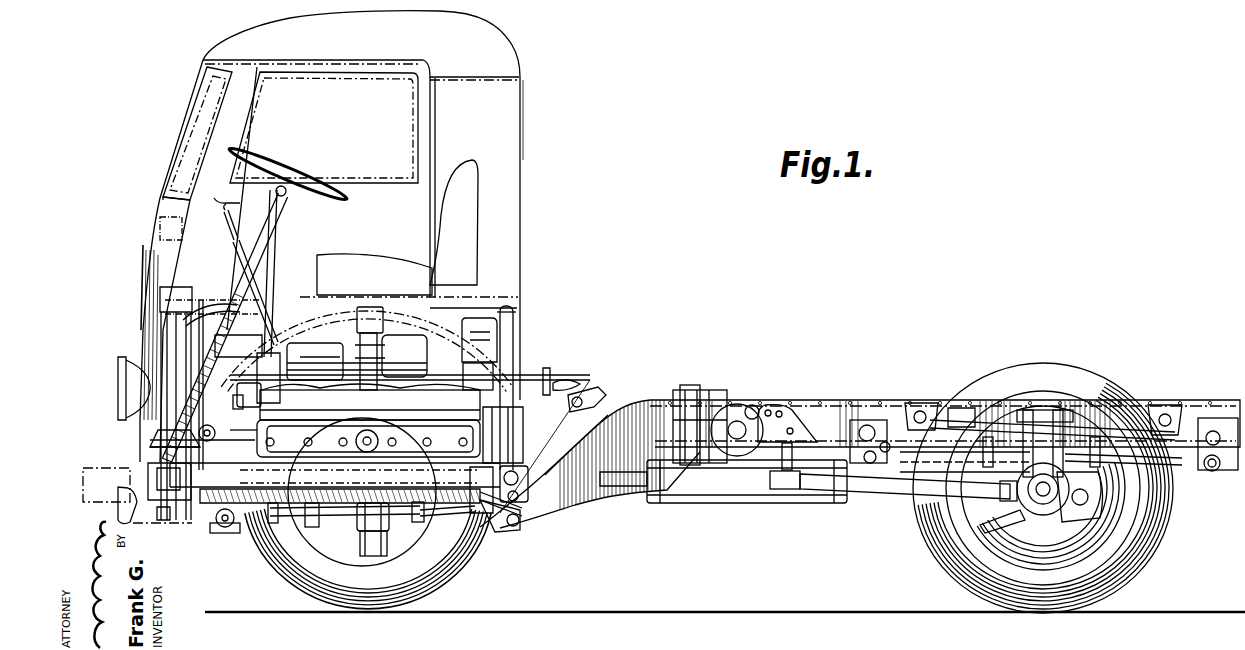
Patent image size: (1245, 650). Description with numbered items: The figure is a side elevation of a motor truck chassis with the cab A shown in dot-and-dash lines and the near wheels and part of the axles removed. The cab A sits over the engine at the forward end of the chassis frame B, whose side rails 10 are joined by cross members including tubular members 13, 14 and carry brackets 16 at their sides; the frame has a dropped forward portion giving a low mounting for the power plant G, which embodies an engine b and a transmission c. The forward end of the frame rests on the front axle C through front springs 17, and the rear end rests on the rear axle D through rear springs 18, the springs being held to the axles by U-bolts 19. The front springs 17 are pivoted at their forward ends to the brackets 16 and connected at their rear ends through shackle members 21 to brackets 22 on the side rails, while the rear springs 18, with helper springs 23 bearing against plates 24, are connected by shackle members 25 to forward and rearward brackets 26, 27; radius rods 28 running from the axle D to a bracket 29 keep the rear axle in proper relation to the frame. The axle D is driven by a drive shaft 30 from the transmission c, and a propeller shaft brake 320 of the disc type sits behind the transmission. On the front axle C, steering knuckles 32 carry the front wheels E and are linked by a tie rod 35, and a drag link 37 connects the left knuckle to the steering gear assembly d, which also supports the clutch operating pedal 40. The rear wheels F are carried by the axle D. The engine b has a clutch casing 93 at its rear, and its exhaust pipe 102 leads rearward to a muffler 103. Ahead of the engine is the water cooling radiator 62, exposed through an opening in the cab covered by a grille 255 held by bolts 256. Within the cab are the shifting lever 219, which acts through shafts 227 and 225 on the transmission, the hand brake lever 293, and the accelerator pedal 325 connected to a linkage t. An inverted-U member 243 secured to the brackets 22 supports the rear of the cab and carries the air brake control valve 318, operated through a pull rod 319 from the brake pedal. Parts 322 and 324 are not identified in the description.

The cab A is at (517, 170).
The chassis frame B is at (777, 400).
The front axle C is at (370, 555).
The rear axle D is at (1030, 500).
The front wheels E is at (267, 557).
The rear wheels F is at (1157, 543).
The power plant G is at (535, 370).
The engine b is at (368, 438).
The transmission c is at (640, 380).
The steering gear assembly d is at (181, 428).
The linkage t is at (355, 350).
The side rails 10 is at (727, 397).
The tubular member 13 is at (744, 401).
The tubular member 14 is at (507, 533).
The brackets 16 is at (213, 520).
The front springs 17 is at (317, 537).
The rear springs 18 is at (1163, 460).
The U-bolts 19 is at (1060, 410).
The shackle members 21 is at (548, 513).
The brackets 22 is at (540, 473).
The helper springs 23 is at (950, 407).
The plates 24 is at (933, 408).
The shackle members 25 is at (1223, 470).
The forwardly disposed bracket 26 is at (843, 440).
The rearwardly disposed bracket 27 is at (1205, 417).
The radius rods 28 is at (920, 462).
The bracket 29 is at (795, 428).
The drive shaft 30 is at (799, 441).
The steering knuckles 32 is at (320, 363).
The tie rod 35 is at (443, 529).
The drag link 37 is at (297, 520).
The clutch operating pedal 40 is at (197, 302).
The water cooling radiator 62 is at (167, 345).
The casing 93 is at (530, 377).
The exhaust pipe 102 is at (523, 528).
The muffler 103 is at (757, 498).
The shifting lever 219 is at (282, 252).
The shaft 225 is at (580, 392).
The shaft 227 is at (560, 383).
The member 243 is at (517, 320).
The grille 255 is at (142, 290).
The bolts 256 is at (160, 227).
The brake lever 293 is at (232, 252).
The control valve 318 is at (489, 300).
The pull rod 319 is at (462, 345).
The propeller shaft brake 320 is at (713, 385).
The oil pan 322 is at (244, 430).
The carburetor 324 is at (247, 390).
The accelerator pedal 325 is at (220, 307).